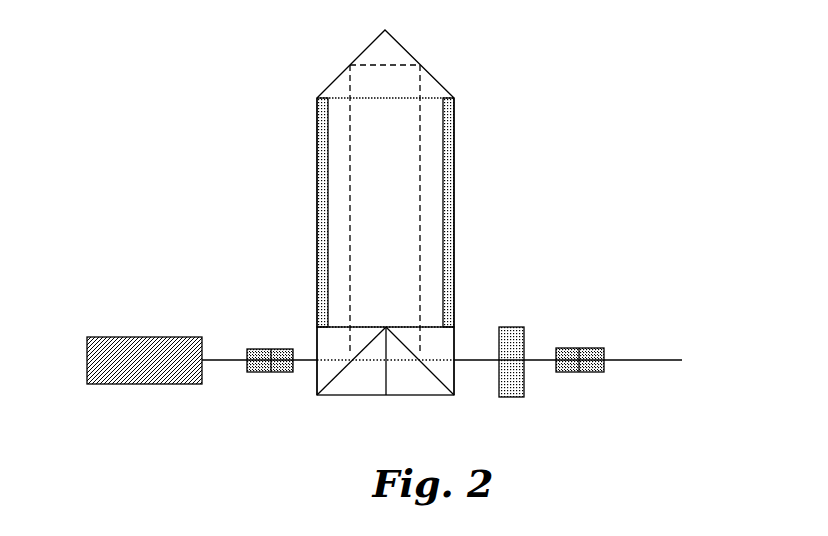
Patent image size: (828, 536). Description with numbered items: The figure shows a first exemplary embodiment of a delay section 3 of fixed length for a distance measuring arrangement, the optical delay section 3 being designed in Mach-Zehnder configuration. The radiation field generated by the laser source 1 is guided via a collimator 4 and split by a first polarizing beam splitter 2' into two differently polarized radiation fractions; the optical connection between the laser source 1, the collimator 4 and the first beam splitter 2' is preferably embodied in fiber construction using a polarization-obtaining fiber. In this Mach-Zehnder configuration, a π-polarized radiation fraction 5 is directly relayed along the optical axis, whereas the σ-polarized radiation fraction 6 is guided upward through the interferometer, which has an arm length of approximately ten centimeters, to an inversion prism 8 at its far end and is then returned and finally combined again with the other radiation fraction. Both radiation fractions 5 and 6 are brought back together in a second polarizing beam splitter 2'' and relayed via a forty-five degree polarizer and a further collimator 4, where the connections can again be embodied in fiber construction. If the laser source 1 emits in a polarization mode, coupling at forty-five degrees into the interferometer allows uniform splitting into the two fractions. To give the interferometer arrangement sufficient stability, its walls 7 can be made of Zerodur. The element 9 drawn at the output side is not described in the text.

The laser source 1 is at (130, 336).
The first polarizing beam splitter 2' is at (297, 347).
The second polarizing beam splitter 2'' is at (504, 302).
The delay section 3 is at (409, 236).
The collimator 4 is at (406, 386).
The π-polarized radiation fraction 5 is at (416, 327).
The σ-polarized radiation fraction 6 is at (320, 210).
The walls 7 is at (324, 212).
The inversion prism 8 is at (435, 64).
The detector 9 is at (553, 338).